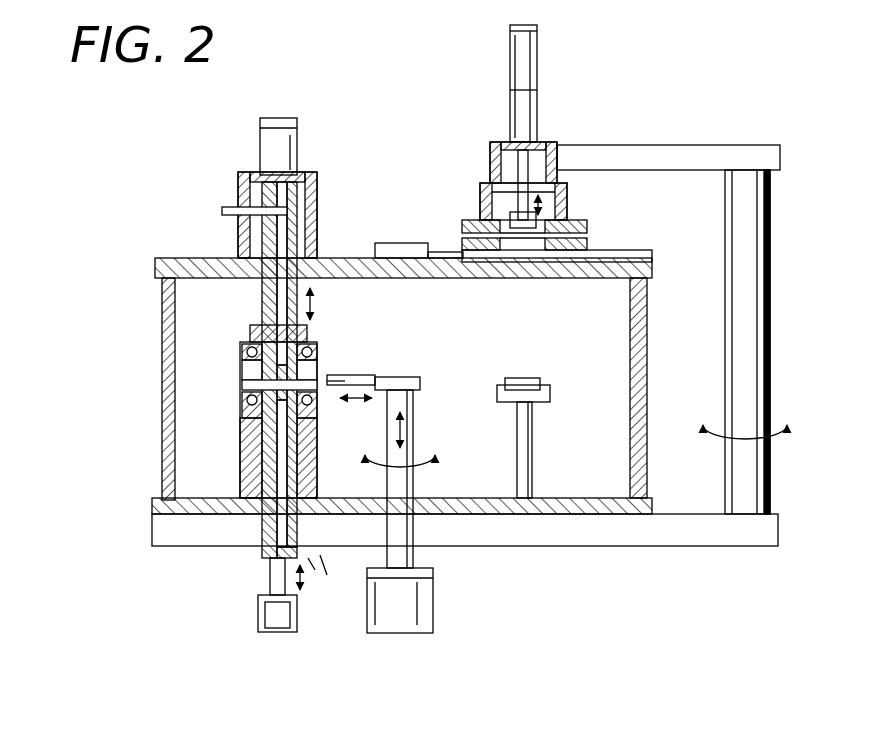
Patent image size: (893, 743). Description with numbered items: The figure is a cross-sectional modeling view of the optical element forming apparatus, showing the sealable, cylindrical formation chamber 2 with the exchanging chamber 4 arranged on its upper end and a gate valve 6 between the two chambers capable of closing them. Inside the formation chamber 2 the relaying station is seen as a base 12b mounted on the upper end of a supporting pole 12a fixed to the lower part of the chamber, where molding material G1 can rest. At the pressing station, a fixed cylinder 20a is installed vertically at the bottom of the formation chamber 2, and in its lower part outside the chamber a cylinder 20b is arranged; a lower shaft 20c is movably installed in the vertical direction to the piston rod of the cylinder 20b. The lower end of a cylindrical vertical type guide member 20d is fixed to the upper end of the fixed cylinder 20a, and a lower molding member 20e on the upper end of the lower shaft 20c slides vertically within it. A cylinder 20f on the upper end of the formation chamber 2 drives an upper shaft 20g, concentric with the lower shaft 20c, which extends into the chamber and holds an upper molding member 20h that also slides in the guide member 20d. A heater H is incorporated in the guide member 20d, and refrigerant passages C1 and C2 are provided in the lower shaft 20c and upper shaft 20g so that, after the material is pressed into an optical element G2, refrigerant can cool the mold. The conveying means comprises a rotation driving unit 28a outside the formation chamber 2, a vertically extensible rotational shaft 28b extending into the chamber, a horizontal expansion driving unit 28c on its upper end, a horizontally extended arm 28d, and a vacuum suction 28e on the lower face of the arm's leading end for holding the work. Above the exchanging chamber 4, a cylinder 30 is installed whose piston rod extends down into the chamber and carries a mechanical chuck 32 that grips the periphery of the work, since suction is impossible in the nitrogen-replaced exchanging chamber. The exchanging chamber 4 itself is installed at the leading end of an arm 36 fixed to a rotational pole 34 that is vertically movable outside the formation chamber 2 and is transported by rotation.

The formation chamber 2 is at (172, 256).
The refrigerant passage C2 is at (172, 298).
The refrigerant passage C1 is at (200, 505).
The arm 36 is at (740, 145).
The rotational pole 34 is at (765, 318).
The cylinder 30 is at (530, 52).
The exchanging chamber 4 is at (555, 185).
The mechanical chuck 32 is at (482, 215).
The molding material G1 is at (565, 212).
The gate valve 6 is at (590, 258).
The base 12b is at (540, 402).
The supporting pole 12a is at (532, 470).
The arm 28d is at (345, 375).
The suction 28e is at (330, 387).
The horizontal expansion driving unit 28c is at (397, 378).
The rotational shaft 28b is at (405, 535).
The rotation driving unit 28a is at (432, 620).
The cylinder 20f is at (260, 132).
The fixed cylinder 20a is at (255, 500).
The upper shaft 20g is at (258, 300).
The heater H is at (252, 332).
The upper molding member 20h is at (245, 382).
The optical element G2 is at (262, 393).
The vertical type guide member 20d is at (255, 420).
The lower molding member 20e is at (252, 448).
The lower shaft 20c is at (262, 565).
The cylinder 20b is at (297, 625).